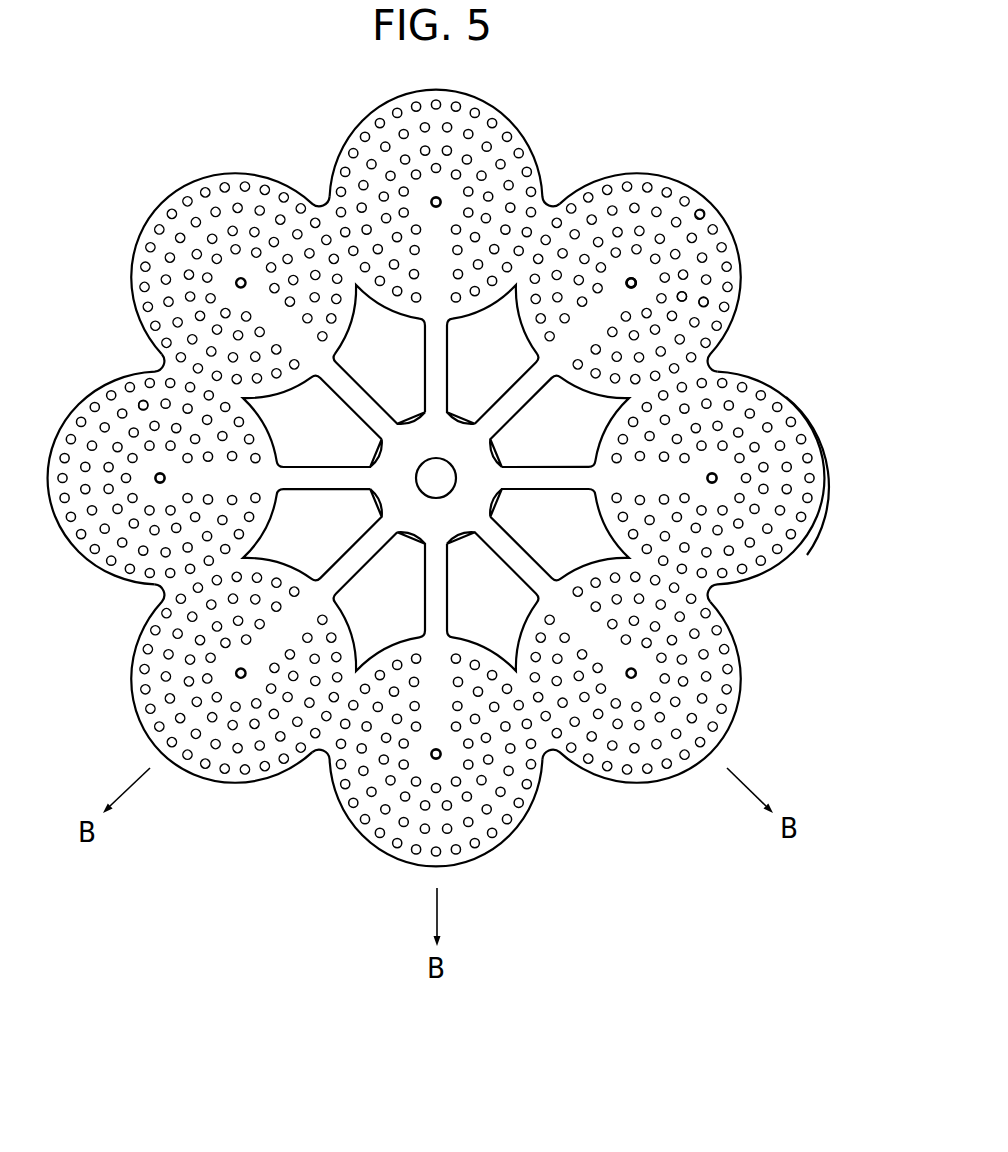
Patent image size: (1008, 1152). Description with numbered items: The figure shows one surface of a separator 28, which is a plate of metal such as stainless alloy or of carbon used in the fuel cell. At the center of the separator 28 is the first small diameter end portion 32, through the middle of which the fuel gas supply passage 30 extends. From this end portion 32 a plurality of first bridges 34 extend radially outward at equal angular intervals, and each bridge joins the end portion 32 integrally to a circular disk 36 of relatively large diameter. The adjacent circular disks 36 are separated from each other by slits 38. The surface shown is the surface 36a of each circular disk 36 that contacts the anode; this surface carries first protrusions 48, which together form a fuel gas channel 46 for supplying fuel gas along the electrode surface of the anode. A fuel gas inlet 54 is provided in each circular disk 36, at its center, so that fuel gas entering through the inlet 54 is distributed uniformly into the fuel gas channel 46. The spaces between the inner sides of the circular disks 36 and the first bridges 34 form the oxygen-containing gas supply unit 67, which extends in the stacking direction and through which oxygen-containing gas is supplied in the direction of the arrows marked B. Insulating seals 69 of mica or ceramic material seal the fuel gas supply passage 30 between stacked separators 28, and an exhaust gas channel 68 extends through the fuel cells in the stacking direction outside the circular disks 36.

The separator 28 is at (732, 131).
The fuel gas supply passage 30 is at (437, 472).
The first small diameter end portion 32 is at (480, 462).
The first bridges 34 is at (452, 359).
The circular disk 36 is at (552, 129).
The surface of the circular disk 36a is at (812, 466).
The slits 38 is at (140, 406).
The fuel gas channel 46 is at (676, 303).
The first protrusions 48 is at (709, 298).
The fuel gas inlet 54 is at (633, 277).
The oxygen-containing gas supply unit 67 is at (373, 608).
The exhaust gas channel 68 is at (806, 553).
The insulating seals 69 is at (364, 451).